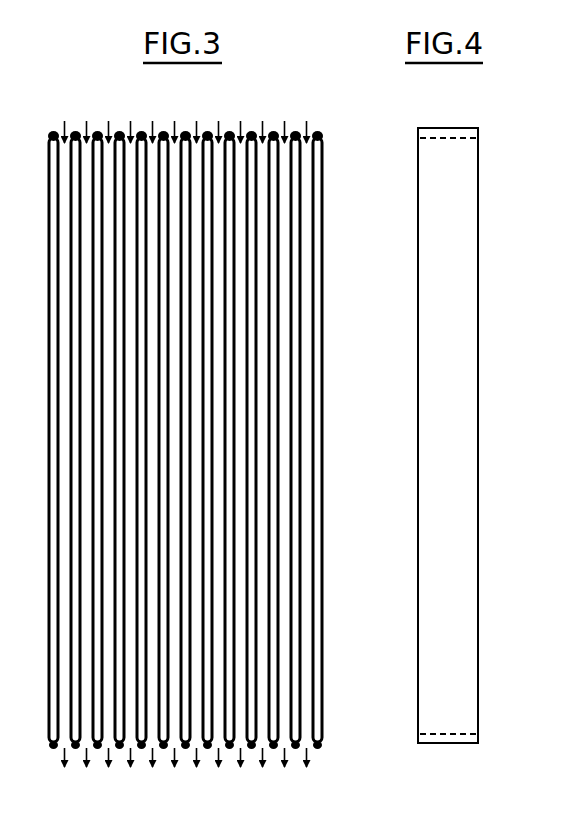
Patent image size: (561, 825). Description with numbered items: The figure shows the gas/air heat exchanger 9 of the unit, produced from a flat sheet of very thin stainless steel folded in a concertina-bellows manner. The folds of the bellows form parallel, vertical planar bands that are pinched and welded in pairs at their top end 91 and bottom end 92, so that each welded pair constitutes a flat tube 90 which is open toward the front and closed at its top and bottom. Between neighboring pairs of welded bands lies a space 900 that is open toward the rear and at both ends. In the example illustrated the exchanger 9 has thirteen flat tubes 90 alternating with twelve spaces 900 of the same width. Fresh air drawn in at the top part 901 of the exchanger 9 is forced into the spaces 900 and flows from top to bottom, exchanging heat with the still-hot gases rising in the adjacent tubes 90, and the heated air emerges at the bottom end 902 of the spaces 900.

In FIG. 3, the exchanger 9 is at (38, 285).
In FIG. 3, the flat tube 90 is at (277, 356).
In FIG. 4, the flat tube 90 is at (455, 296).
In FIG. 3, the space 900 is at (308, 182).
In FIG. 3, the top end 91 is at (329, 142).
In FIG. 4, the top end 91 is at (457, 128).
In FIG. 3, the bottom end 92 is at (324, 743).
In FIG. 4, the bottom end 92 is at (449, 743).
In FIG. 3, the top part 901 is at (62, 141).
In FIG. 3, the bottom end 902 is at (62, 735).